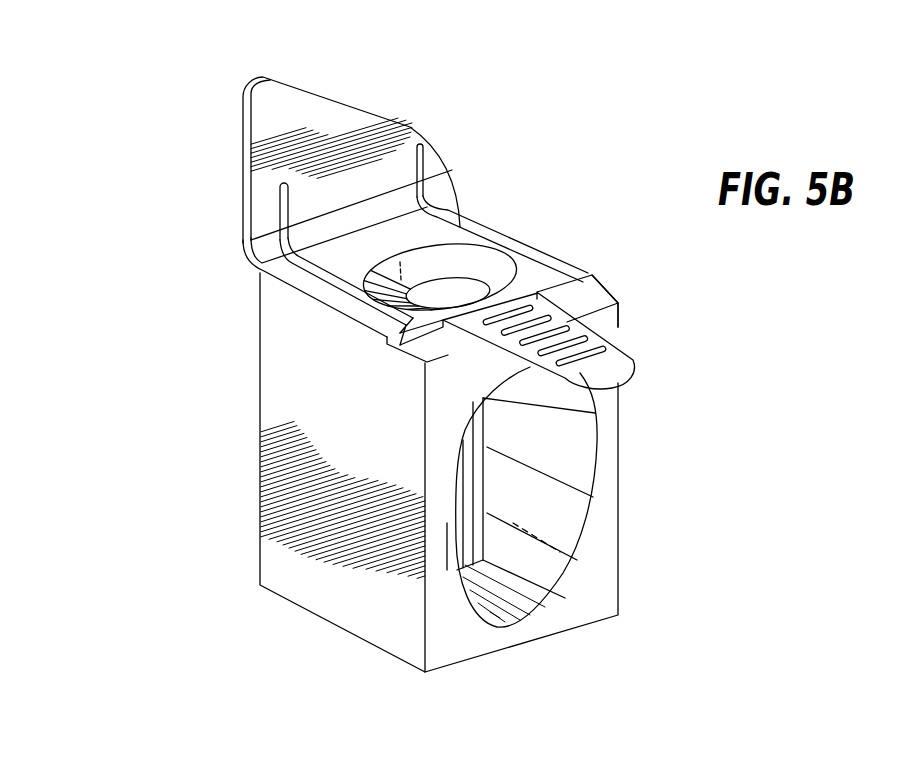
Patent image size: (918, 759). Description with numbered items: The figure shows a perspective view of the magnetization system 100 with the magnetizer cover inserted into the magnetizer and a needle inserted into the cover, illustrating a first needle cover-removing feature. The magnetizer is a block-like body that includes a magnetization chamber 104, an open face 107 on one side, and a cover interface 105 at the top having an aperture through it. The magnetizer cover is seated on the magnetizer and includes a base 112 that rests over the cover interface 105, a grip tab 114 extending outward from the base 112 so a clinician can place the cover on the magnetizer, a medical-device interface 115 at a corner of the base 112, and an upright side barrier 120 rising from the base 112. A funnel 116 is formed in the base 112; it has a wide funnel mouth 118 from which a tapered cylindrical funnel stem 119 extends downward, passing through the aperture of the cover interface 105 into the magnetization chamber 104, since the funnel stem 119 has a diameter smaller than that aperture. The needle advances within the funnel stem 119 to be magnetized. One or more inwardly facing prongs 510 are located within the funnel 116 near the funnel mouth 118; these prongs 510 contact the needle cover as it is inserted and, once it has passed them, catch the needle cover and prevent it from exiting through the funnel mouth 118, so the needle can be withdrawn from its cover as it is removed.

The magnetization system 100 is at (122, 233).
The magnetization chamber 104 is at (512, 555).
The cover interface 105 is at (590, 300).
The open face 107 is at (607, 533).
The base 112 is at (323, 305).
The grip tab 114 is at (635, 362).
The medical-device interface 115 is at (575, 272).
The funnel 116 is at (435, 263).
The funnel mouth 118 is at (448, 260).
The funnel stem 119 is at (477, 458).
The side barrier 120 is at (351, 105).
The inwardly facing prongs 510 is at (453, 292).